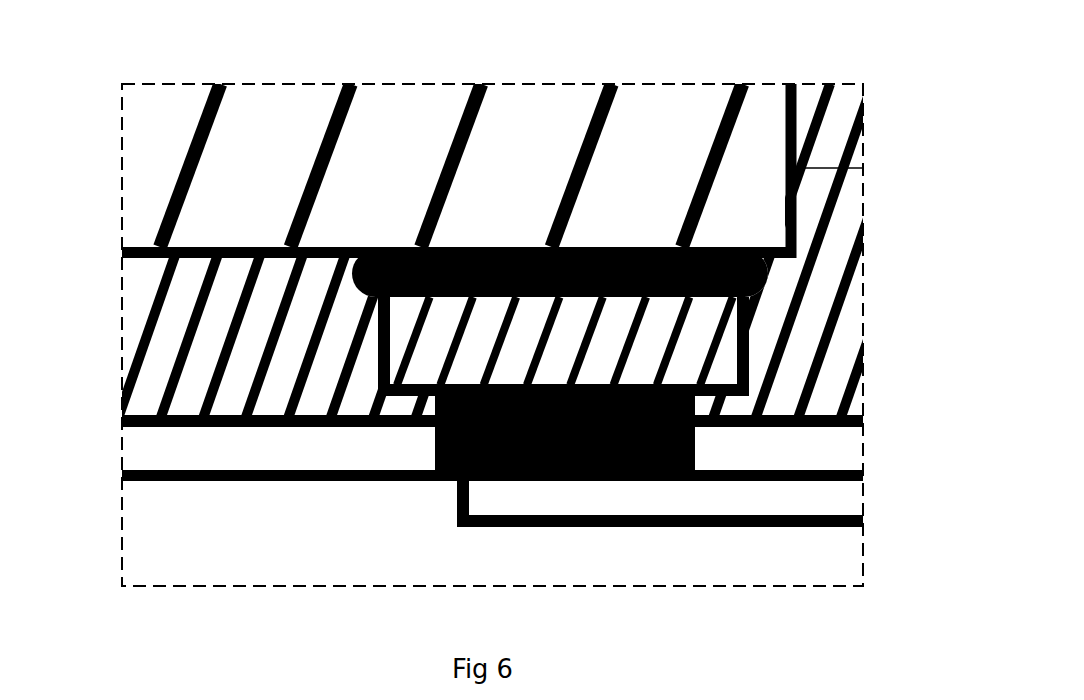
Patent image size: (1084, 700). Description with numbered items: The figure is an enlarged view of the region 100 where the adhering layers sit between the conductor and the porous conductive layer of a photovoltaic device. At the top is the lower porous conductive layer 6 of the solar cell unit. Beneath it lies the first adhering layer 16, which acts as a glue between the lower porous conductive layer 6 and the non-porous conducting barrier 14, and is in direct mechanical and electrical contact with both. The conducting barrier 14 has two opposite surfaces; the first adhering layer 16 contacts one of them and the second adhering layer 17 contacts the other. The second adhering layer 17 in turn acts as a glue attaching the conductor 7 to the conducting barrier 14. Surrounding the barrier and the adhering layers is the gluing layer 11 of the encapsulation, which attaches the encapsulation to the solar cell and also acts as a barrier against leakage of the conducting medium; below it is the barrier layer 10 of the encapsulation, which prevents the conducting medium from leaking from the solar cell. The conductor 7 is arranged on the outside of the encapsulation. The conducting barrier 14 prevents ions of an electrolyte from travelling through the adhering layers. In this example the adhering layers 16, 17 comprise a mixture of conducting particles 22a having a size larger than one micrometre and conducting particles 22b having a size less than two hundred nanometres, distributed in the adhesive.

The assembly 100 is at (660, 83).
The lower porous conductive layer 6 is at (182, 110).
The gluing layer 11 is at (840, 228).
The first adhering layer 16 is at (763, 272).
The conducting barrier 14 is at (727, 328).
The second adhering layer 17 is at (698, 448).
The barrier layer 10 is at (840, 434).
The conductor 7 is at (830, 496).
The conducting particles 22a is at (672, 481).
The conducting particles 22b is at (527, 481).